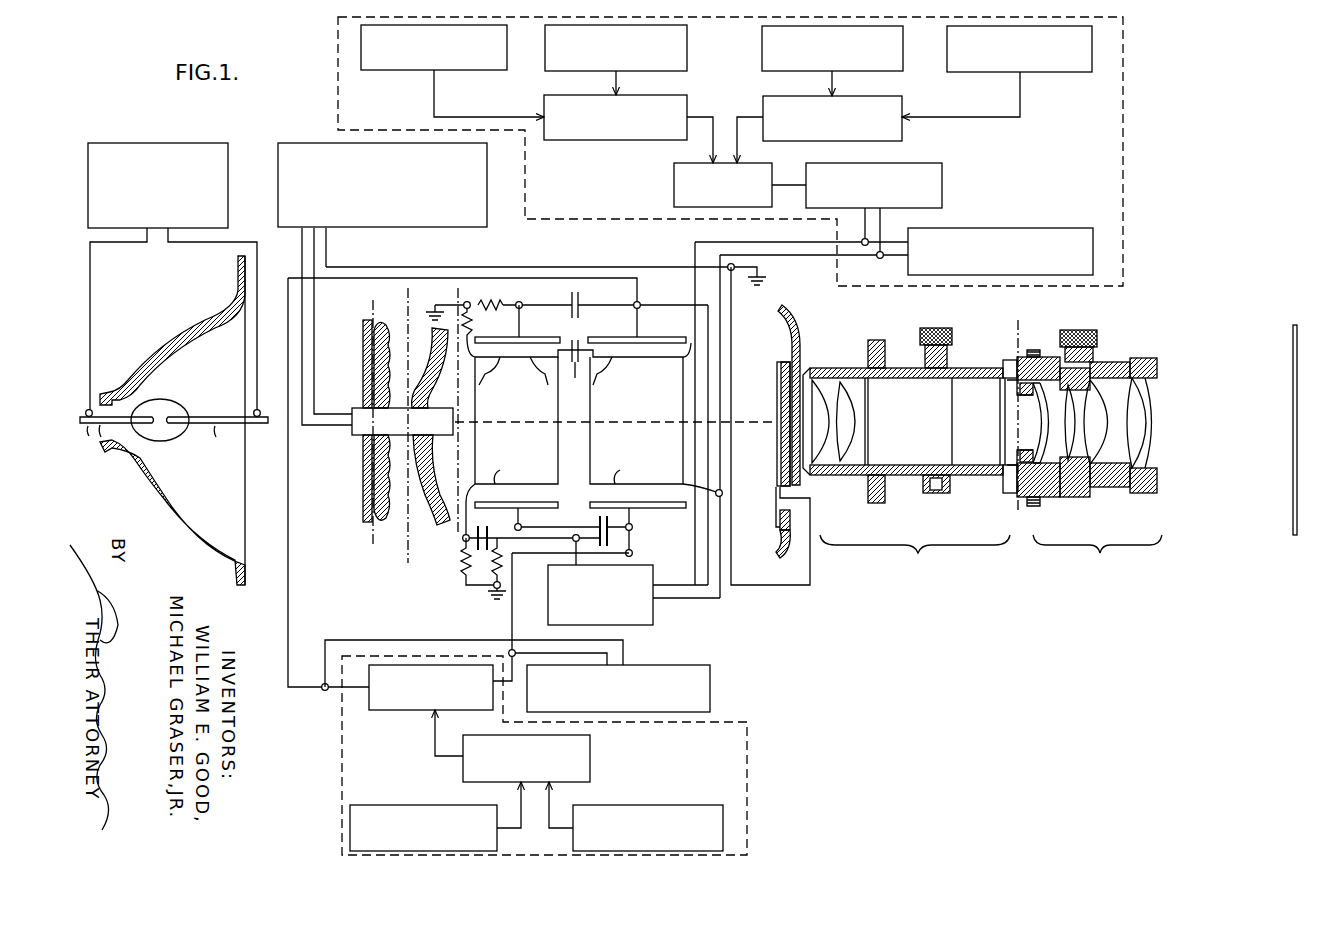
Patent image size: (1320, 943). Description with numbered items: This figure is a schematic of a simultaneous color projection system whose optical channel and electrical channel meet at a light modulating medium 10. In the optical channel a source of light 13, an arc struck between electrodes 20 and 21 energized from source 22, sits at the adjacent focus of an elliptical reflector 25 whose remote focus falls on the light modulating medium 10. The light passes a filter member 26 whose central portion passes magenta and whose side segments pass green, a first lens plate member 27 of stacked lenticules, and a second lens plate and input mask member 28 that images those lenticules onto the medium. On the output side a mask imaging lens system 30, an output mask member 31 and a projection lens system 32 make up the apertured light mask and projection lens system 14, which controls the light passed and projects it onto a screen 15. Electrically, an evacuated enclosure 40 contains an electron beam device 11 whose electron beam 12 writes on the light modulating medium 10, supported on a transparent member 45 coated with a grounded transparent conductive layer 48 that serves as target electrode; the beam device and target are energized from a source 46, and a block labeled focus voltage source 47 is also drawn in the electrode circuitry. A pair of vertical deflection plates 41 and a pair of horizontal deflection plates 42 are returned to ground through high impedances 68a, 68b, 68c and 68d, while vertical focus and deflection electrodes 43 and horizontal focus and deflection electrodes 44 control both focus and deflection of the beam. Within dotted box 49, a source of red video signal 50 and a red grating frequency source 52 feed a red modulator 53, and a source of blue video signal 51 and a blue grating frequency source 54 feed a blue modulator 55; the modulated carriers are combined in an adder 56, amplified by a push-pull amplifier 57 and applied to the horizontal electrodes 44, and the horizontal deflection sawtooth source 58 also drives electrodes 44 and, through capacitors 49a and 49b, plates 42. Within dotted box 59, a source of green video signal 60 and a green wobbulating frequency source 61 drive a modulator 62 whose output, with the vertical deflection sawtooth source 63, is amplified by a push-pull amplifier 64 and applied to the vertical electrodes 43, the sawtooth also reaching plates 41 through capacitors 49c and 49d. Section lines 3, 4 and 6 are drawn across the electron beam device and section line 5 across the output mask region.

The light modulating medium 10 is at (777, 375).
The electron beam device 11 is at (356, 431).
The electron beam 12 is at (637, 418).
The source of light 13 is at (166, 400).
The apertured light mask and projection lens system 14 is at (990, 490).
The screen 15 is at (1290, 502).
The electrode 20 is at (113, 435).
The electrode 21 is at (218, 435).
The source 22 is at (143, 143).
The elliptical reflector 25 is at (170, 310).
The filter member 26 is at (363, 490).
The first lens plate member 27 is at (390, 386).
The second lens plate and input mask member 28 is at (422, 482).
The mask imaging lens system 30 is at (931, 459).
The output mask member 31 is at (1000, 415).
The projection lens system 32 is at (1100, 461).
The section line 3 is at (439, 290).
The section line 4 is at (389, 290).
The section line 5 is at (1040, 320).
The section line 6 is at (354, 300).
The evacuated enclosure 40 is at (800, 337).
The vertical deflection plates 41 is at (547, 337).
The horizontal deflection plates 42 is at (439, 368).
The vertical focus and deflection electrodes 43 is at (660, 337).
The horizontal focus and deflection electrodes 44 is at (682, 446).
The transparent member 45 is at (781, 478).
The source 46 is at (320, 143).
The focus voltage source 47 is at (653, 565).
The transparent conductive layer 48 is at (778, 468).
The dotted box 49 is at (1123, 140).
The capacitor 49a is at (568, 378).
The capacitor 49b is at (483, 525).
The capacitor 49c is at (582, 296).
The capacitor 49d is at (612, 520).
The source of red video signal 50 is at (1067, 72).
The source of blue video signal 51 is at (383, 70).
The red grating frequency source 52 is at (903, 44).
The red modulator 53 is at (902, 99).
The blue grating frequency source 54 is at (687, 45).
The blue modulator 55 is at (687, 98).
The adder 56 is at (674, 186).
The push-pull amplifier 57 is at (942, 185).
The horizontal deflection sawtooth source 58 is at (1060, 228).
The dotted box 59 is at (747, 772).
The source of green video signal 60 is at (381, 805).
The green grating or wobbulating frequency source 61 is at (677, 805).
The modulator 62 is at (590, 757).
The vertical deflection sawtooth source 63 is at (710, 688).
The push-pull amplifier 64 is at (382, 710).
The high impedance 68a is at (490, 298).
The high impedance 68b is at (493, 590).
The high impedance 68c is at (476, 324).
The high impedance 68d is at (463, 552).